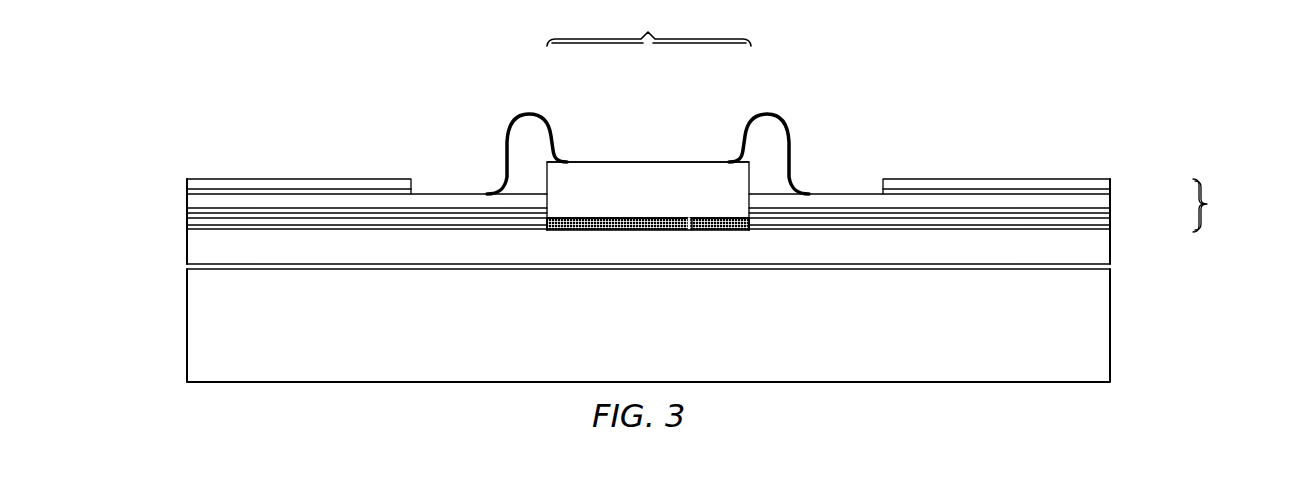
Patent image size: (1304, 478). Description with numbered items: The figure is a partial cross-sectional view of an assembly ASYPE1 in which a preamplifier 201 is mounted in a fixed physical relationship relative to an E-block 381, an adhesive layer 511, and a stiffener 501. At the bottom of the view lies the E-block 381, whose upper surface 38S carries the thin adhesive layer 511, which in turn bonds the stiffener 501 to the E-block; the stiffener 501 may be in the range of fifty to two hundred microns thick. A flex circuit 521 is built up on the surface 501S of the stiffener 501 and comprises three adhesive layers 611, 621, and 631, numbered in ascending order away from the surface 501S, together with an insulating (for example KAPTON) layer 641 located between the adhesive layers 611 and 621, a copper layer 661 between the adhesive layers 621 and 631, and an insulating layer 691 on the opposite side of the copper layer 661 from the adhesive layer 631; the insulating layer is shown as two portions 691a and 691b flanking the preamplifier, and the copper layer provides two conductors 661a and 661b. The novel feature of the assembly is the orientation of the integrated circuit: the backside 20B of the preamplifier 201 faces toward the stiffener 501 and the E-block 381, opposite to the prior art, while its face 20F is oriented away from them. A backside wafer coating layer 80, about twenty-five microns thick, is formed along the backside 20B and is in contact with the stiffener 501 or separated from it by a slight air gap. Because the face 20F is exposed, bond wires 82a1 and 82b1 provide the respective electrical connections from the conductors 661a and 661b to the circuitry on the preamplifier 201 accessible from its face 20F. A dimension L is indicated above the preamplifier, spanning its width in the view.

The E-block 381 is at (648, 325).
The substrate top surface 38S is at (1008, 270).
The adhesive layer 511 is at (355, 270).
The stiffener 501 is at (196, 252).
The surface of stiffener 501S is at (895, 230).
The adhesive layer 611 is at (1110, 227).
The insulating layer 641 is at (196, 218).
The adhesive layer 621 is at (1110, 210).
The adhesive layer 631 is at (1110, 192).
The flex circuit 521 is at (1225, 205).
The copper layer 661 is at (125, 203).
The conductor 661a is at (452, 197).
The conductor 661b is at (845, 198).
The insulating layer 691 is at (168, 184).
The top electrode left portion 691a is at (272, 185).
The top electrode right portion 691b is at (969, 185).
The preamplifier 201 is at (648, 196).
The face 20F is at (614, 162).
The backside 20B is at (690, 230).
The backside wafer coating layer 80 is at (602, 230).
The bond wire 82a1 is at (530, 114).
The bond wire 82b1 is at (766, 113).
The length of element L is at (649, 24).
The assembly ASYPE1 is at (864, 78).